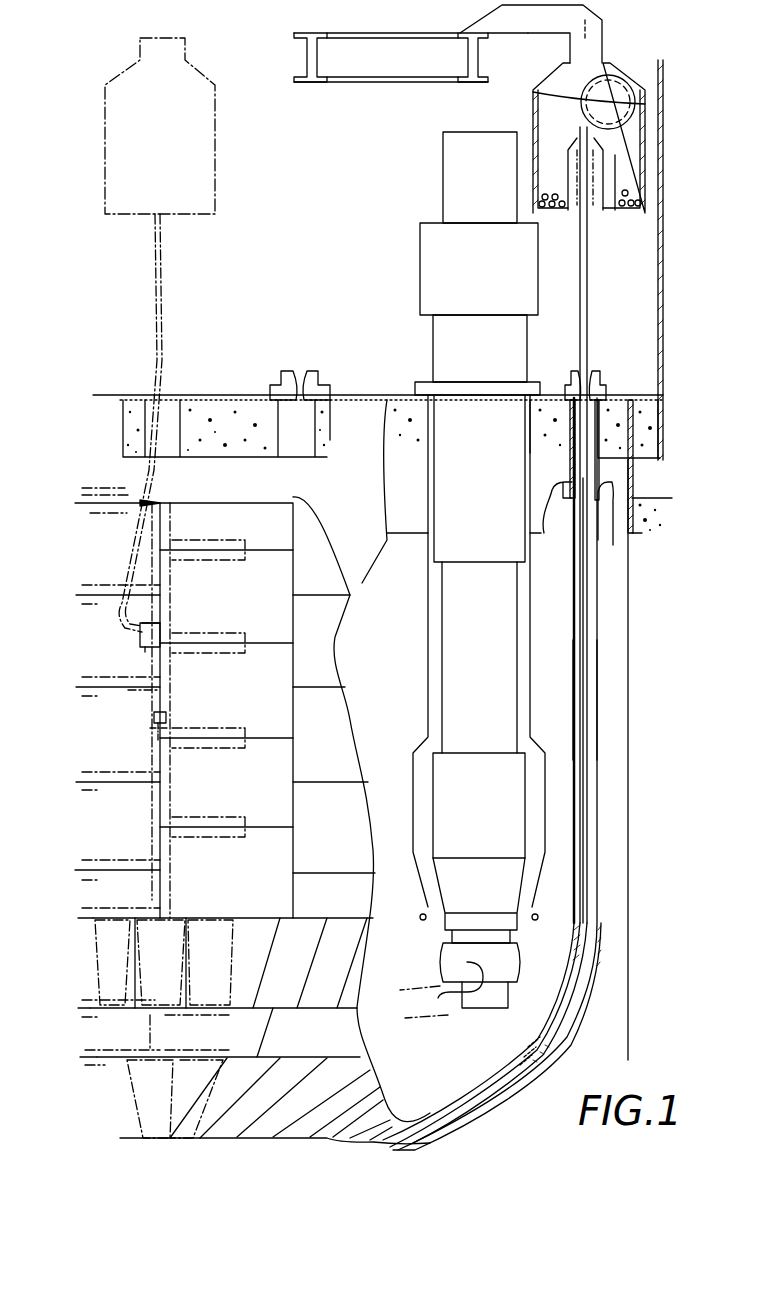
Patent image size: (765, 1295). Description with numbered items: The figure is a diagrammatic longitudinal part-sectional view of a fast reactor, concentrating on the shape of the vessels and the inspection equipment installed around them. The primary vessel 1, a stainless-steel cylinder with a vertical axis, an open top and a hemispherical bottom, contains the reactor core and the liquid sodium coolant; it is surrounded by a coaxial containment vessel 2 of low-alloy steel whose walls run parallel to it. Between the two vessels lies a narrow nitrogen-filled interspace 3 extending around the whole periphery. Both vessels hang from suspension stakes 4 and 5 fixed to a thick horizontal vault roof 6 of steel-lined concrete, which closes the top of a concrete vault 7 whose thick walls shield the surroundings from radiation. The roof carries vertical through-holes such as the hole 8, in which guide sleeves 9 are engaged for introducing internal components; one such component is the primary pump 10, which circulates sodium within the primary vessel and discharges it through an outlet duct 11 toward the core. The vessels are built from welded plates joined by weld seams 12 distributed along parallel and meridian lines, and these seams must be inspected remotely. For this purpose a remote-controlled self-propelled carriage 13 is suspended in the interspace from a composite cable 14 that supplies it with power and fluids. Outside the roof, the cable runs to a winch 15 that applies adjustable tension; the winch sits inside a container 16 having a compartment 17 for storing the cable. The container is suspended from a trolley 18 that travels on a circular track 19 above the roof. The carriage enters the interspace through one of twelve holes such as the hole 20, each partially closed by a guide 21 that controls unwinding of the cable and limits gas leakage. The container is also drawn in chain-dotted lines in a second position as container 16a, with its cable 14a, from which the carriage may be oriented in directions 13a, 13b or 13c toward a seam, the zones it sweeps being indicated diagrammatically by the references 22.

The primary vessel 1 is at (571, 700).
The containment vessel 2 is at (598, 700).
The interspace 3 is at (590, 752).
The suspension stake 4 is at (563, 500).
The suspension stake 5 is at (606, 527).
The vault roof 6 is at (383, 408).
The concrete vault 7 is at (660, 572).
The through-hole 8 is at (428, 528).
The guide sleeve 9 is at (426, 655).
The primary pump 10 is at (490, 709).
The outlet duct 11 is at (445, 992).
The weld seam 12 is at (318, 598).
The self-propelled carriage 13 is at (537, 1050).
The carriage orientation direction 13a is at (88, 514).
The carriage orientation direction 13b is at (147, 622).
The carriage orientation direction 13c is at (165, 717).
The composite cable 14 is at (586, 306).
The composite cable in second position 14a is at (155, 290).
The winch 15 is at (616, 103).
The container 16 is at (610, 218).
The container in second position 16a is at (212, 205).
The cable storage compartment 17 is at (642, 183).
The trolley 18 is at (572, 50).
The circular track 19 is at (387, 78).
The through-hole 20 is at (172, 420).
The guide 21 is at (278, 372).
The swept zone 22 is at (130, 694).